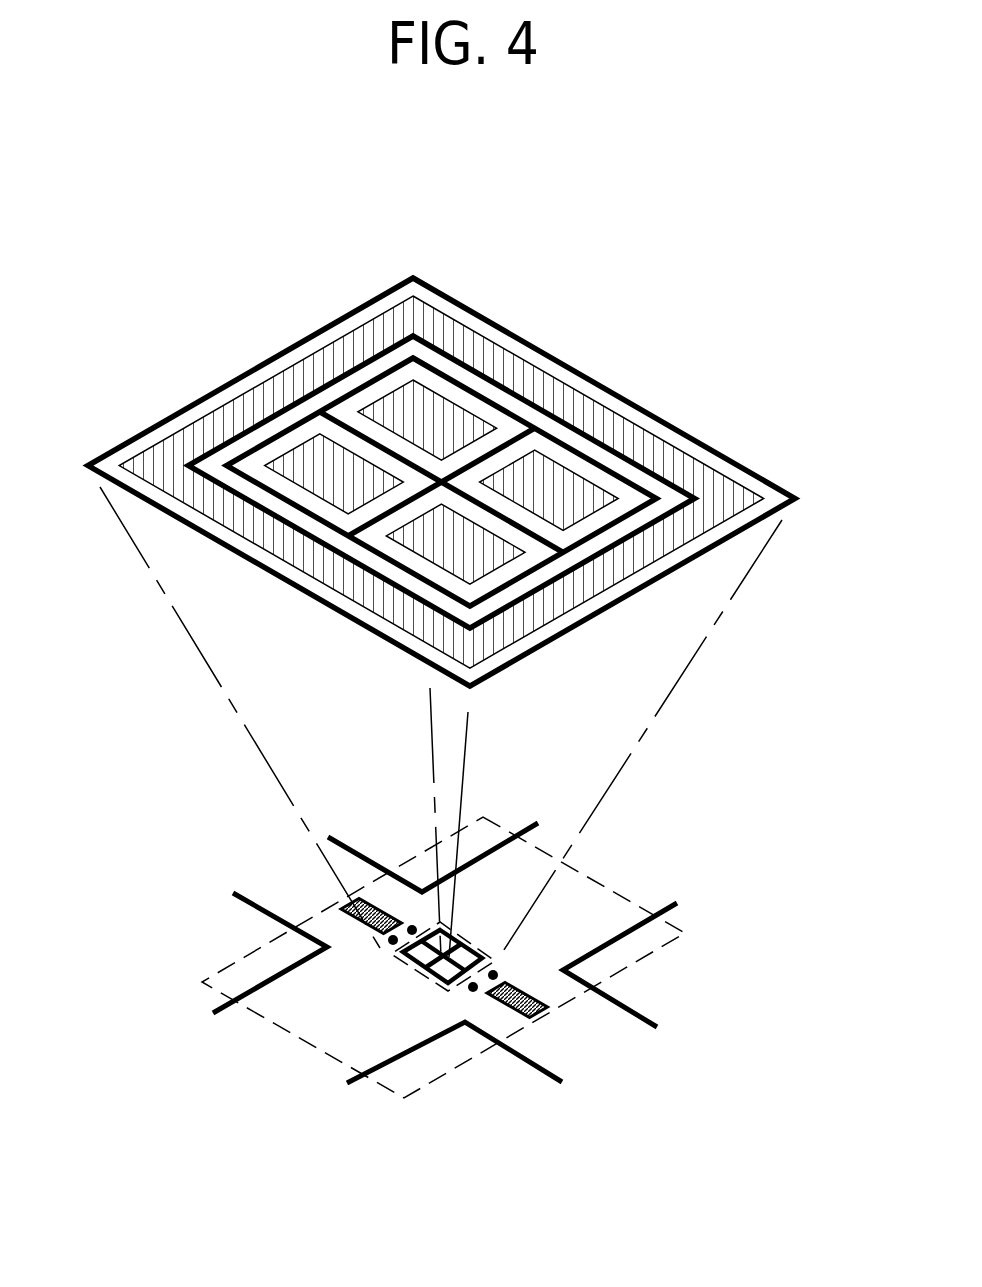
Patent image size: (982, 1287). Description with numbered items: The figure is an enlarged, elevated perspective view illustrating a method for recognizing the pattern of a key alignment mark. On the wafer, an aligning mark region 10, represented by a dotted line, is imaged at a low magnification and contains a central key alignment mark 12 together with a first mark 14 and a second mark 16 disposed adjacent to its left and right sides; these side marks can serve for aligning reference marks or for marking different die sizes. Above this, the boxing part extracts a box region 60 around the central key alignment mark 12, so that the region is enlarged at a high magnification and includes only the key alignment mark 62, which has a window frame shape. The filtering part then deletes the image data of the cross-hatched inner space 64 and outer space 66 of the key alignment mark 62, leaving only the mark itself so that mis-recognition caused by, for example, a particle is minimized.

The aligning mark region 10 is at (243, 957).
The central key alignment mark 12 is at (400, 971).
The first mark 14 is at (493, 975).
The second mark 16 is at (543, 1012).
The box region 60 is at (477, 304).
The key alignment mark 62 is at (480, 387).
The inner space 64 is at (568, 483).
The outer space 66 is at (703, 522).